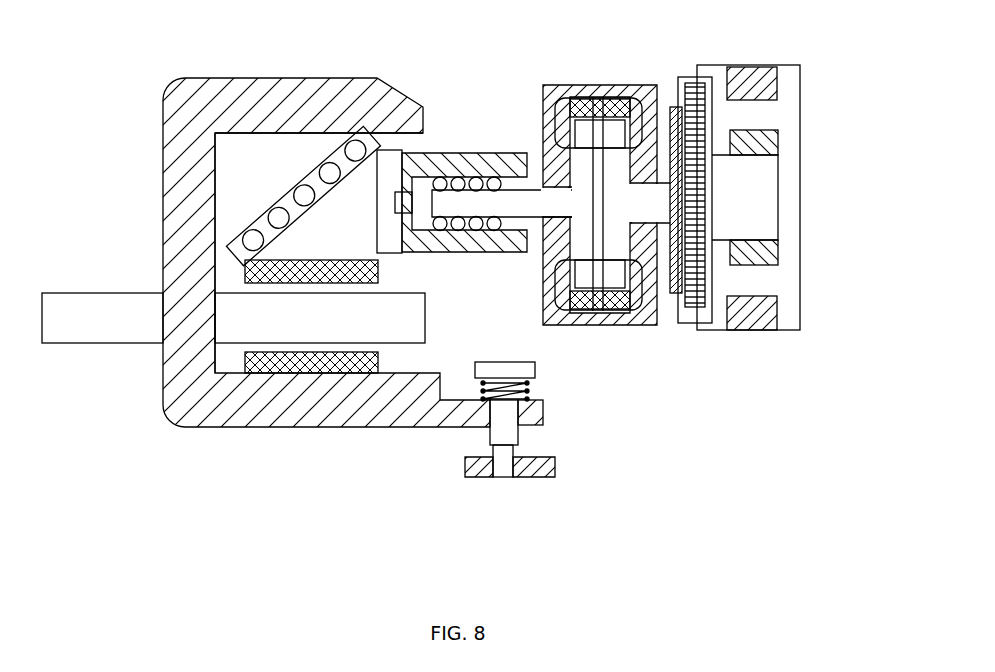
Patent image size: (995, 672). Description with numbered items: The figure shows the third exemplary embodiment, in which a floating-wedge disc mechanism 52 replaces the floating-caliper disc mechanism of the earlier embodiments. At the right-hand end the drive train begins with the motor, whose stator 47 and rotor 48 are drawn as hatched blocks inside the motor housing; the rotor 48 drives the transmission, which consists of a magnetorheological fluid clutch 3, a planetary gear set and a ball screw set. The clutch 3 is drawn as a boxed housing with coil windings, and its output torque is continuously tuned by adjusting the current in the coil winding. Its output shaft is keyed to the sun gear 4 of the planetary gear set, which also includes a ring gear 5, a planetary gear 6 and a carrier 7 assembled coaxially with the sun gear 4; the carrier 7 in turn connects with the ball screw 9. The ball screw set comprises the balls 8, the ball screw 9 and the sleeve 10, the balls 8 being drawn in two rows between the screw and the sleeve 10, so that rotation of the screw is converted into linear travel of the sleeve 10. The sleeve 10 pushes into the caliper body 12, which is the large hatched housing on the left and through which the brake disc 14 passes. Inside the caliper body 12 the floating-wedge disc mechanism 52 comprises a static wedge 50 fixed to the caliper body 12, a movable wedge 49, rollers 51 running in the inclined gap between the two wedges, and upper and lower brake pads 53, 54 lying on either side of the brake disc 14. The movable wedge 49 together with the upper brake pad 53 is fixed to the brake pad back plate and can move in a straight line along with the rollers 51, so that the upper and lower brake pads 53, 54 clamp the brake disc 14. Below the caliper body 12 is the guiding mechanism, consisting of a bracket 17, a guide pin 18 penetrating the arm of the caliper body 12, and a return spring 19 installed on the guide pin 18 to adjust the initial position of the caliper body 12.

The floating-wedge disc mechanism 52 is at (145, 123).
The caliper body 12 is at (205, 142).
The brake disc 14 is at (147, 333).
The upper brake pad 53 is at (265, 273).
The lower brake pad 54 is at (338, 367).
The static wedge 50 is at (260, 160).
The movable wedge 49 is at (340, 218).
The rollers 51 is at (368, 146).
The sleeve 10 is at (423, 173).
The ball screw 9 is at (467, 202).
The ball 8 is at (498, 175).
The magnetorheological fluid clutch 3 is at (562, 73).
The carrier 7 is at (642, 120).
The sun gear 4 is at (680, 118).
The ring gear 5 is at (699, 99).
The planetary gear 6 is at (706, 112).
The stator 47 is at (765, 148).
The rotor 48 is at (778, 82).
The bracket 17 is at (476, 465).
The guide pin 18 is at (509, 410).
The return spring 19 is at (522, 400).